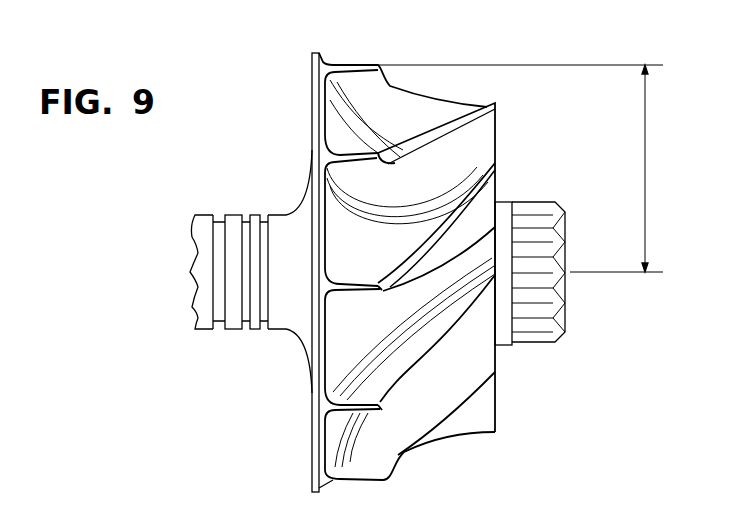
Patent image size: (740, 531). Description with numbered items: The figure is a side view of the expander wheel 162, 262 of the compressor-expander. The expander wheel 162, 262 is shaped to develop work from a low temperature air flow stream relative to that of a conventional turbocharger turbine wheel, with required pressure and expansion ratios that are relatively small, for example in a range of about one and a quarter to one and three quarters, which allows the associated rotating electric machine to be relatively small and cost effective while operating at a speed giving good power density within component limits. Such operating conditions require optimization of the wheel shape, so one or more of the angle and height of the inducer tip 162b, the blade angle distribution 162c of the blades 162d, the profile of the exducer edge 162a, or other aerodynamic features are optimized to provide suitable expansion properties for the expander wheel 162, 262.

The expander wheel 162 is at (248, 98).
The expander wheel 262 is at (377, 272).
The exducer edge 162a is at (499, 141).
The inducer tip 162b is at (379, 66).
The blade angle distribution 162c is at (452, 243).
The blades 162d is at (457, 387).